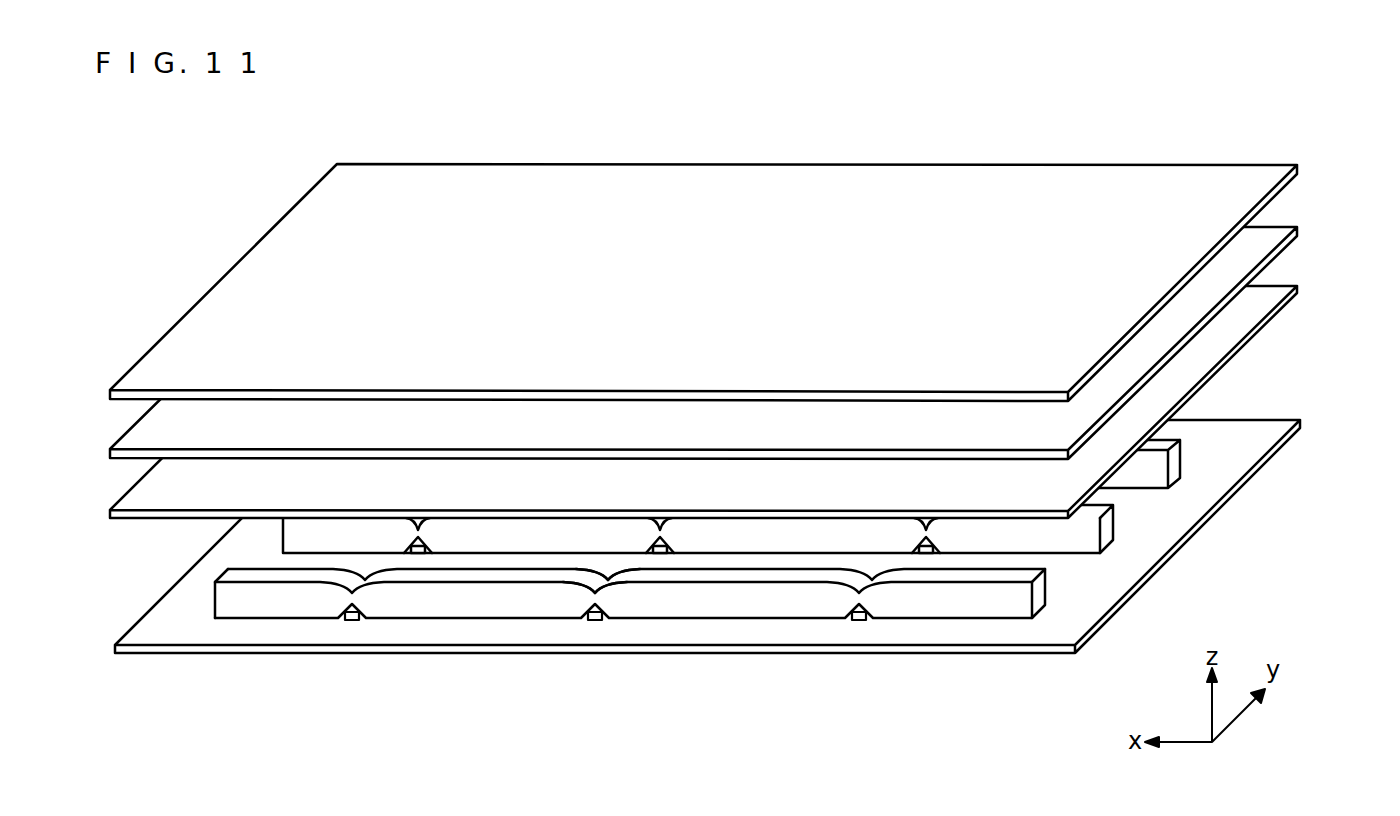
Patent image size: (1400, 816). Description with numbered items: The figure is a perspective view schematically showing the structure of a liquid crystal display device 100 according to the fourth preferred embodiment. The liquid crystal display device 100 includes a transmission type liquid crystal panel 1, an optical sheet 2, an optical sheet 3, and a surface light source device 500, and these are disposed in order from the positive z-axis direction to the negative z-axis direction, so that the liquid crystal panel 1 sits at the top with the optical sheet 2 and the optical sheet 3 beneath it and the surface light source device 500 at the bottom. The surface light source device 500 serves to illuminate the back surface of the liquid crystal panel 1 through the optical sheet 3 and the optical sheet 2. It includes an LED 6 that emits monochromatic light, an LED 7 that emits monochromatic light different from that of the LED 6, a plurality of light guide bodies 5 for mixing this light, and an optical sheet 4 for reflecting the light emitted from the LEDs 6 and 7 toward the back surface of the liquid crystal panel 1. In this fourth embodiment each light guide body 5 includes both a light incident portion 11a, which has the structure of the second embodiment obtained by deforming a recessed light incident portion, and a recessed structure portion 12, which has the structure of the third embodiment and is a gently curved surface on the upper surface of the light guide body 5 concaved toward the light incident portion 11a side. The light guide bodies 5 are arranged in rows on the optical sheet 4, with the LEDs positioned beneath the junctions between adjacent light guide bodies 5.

The liquid crystal panel 1 is at (277, 222).
The optical sheet 2 is at (148, 427).
The optical sheet 3 is at (146, 496).
The optical sheet 4 is at (157, 618).
The light guide body 5 is at (711, 621).
The LED 6 is at (351, 622).
The LED 7 is at (593, 622).
The light incident portion 11a is at (870, 623).
The recessed structure portion 12 is at (597, 578).
The liquid crystal display device 100 is at (1315, 155).
The surface light source device 500 is at (1128, 497).